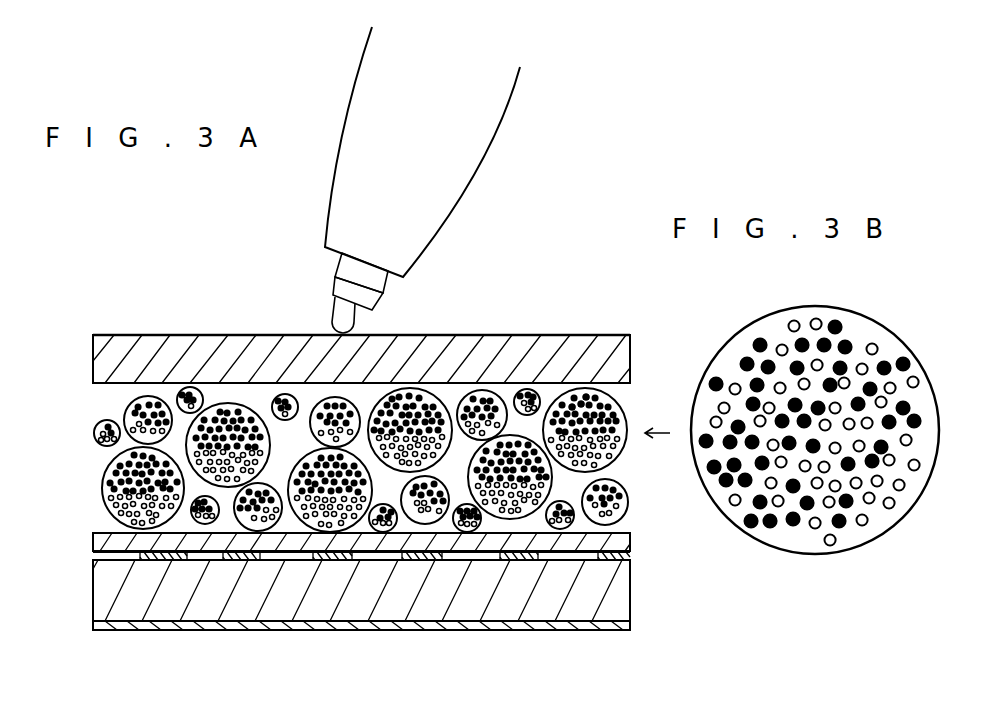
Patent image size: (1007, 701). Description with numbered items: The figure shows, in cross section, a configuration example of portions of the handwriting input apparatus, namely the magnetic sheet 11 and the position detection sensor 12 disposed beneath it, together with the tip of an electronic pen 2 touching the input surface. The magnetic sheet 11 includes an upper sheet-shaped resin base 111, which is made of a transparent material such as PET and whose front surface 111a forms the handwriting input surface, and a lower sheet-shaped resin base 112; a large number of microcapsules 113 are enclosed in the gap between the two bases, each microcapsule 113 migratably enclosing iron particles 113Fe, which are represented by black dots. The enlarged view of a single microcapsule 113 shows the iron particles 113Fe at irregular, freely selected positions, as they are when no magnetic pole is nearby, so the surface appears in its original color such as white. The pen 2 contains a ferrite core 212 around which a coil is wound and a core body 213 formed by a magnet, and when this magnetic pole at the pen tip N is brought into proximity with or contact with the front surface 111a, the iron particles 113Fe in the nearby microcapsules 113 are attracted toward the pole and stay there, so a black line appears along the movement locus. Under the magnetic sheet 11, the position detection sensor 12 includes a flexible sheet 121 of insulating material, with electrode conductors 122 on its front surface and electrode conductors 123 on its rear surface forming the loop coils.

In FIG. 3A, the dispenser nozzle 2 is at (472, 165).
In FIG. 3A, the ferrite core 212 is at (348, 267).
In FIG. 3A, the core body 213 is at (332, 320).
In FIG. 3A, the nozzle tip N is at (364, 315).
In FIG. 3A, the magnetic sheet 11 is at (90, 335).
In FIG. 3A, the sheet-shaped resin base 111 is at (147, 345).
In FIG. 3A, the front surface 111a is at (240, 335).
In FIG. 3A, the microcapsules 113 is at (442, 398).
In FIG. 3B, the microcapsules 113 is at (807, 307).
In FIG. 3A, the iron particles 113Fe is at (570, 402).
In FIG. 3B, the iron particles 113Fe is at (785, 517).
In FIG. 3A, the sheet-shaped resin base 112 is at (622, 543).
In FIG. 3A, the position detection sensor 12 is at (90, 560).
In FIG. 3A, the electrode conductors 122 is at (157, 555).
In FIG. 3A, the flexible sheet 121 is at (267, 590).
In FIG. 3A, the electrode conductors 123 is at (367, 630).